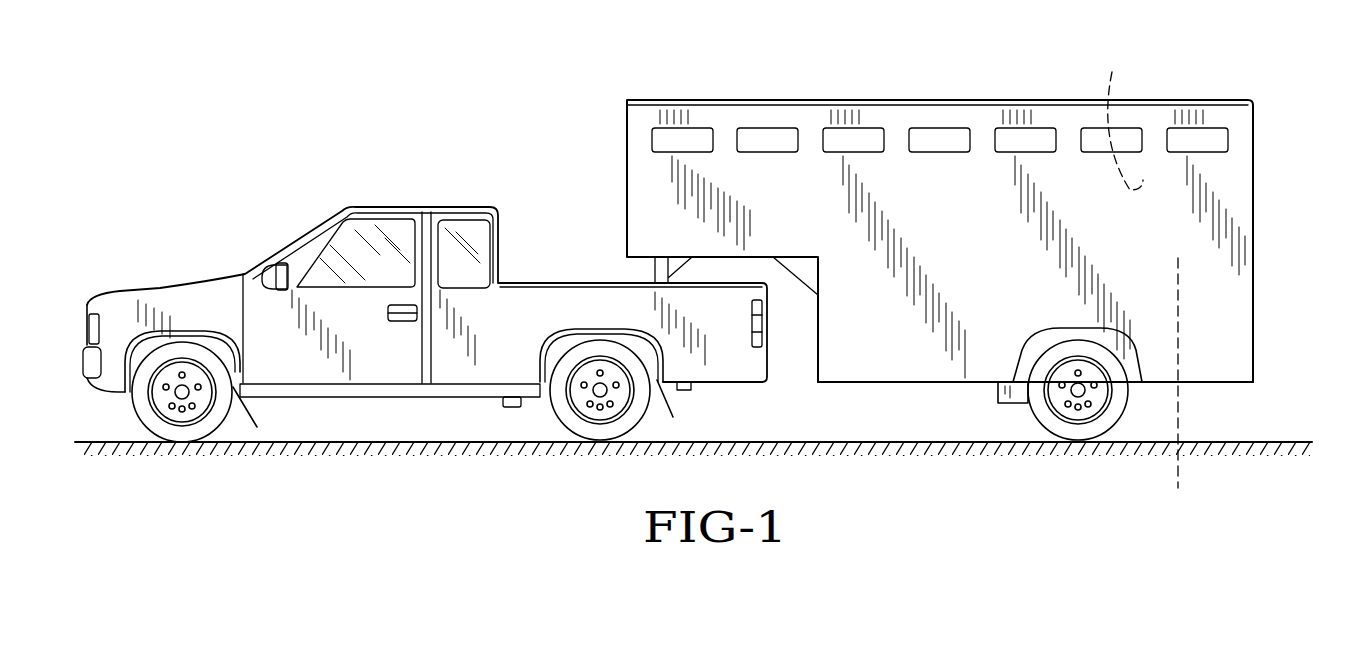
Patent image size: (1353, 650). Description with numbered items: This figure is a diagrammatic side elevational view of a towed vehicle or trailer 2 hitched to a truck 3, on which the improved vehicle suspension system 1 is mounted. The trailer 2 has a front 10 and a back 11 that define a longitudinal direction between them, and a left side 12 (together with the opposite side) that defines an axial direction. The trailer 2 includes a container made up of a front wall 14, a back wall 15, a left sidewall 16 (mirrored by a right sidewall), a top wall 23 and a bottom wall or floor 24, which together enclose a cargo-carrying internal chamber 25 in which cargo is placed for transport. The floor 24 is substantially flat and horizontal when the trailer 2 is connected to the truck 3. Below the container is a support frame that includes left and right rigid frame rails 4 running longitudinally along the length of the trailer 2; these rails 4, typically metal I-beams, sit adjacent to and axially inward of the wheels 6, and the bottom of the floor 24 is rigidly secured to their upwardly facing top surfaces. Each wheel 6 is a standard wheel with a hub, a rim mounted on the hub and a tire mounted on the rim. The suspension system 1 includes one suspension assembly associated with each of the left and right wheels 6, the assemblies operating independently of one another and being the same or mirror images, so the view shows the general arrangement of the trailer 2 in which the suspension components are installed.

The vehicle suspension system 1 is at (1020, 408).
The trailer 2 is at (1200, 102).
The truck 3 is at (396, 207).
The frame rail 4 is at (1010, 380).
The wheel 6 is at (1073, 345).
The front 10 is at (627, 207).
The back 11 is at (1253, 243).
The left side 12 is at (786, 188).
The front wall 14 is at (627, 163).
The back wall 15 is at (1253, 180).
The left sidewall 16 is at (956, 188).
The top wall 23 is at (880, 100).
The floor 24 is at (896, 385).
The internal chamber 25 is at (1069, 116).